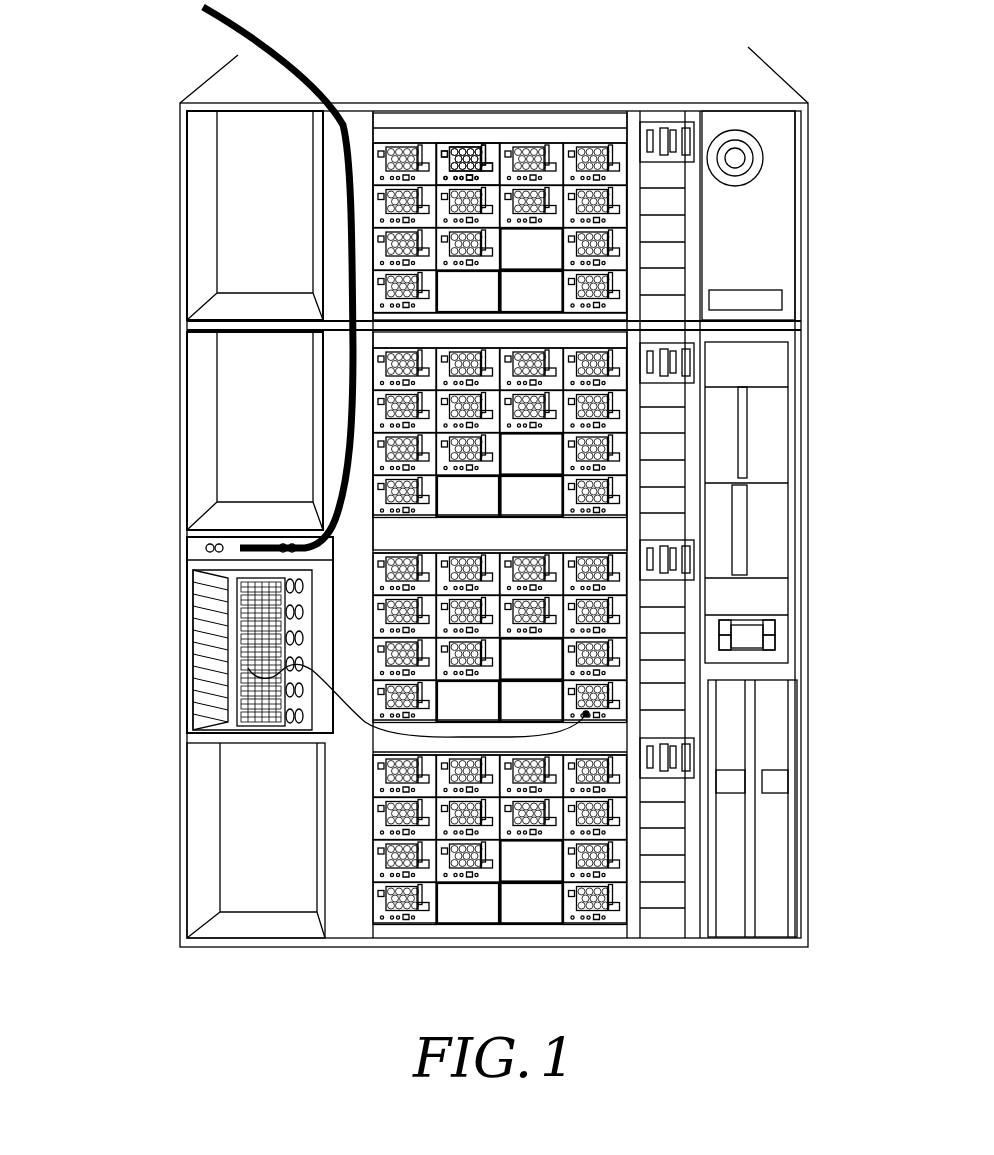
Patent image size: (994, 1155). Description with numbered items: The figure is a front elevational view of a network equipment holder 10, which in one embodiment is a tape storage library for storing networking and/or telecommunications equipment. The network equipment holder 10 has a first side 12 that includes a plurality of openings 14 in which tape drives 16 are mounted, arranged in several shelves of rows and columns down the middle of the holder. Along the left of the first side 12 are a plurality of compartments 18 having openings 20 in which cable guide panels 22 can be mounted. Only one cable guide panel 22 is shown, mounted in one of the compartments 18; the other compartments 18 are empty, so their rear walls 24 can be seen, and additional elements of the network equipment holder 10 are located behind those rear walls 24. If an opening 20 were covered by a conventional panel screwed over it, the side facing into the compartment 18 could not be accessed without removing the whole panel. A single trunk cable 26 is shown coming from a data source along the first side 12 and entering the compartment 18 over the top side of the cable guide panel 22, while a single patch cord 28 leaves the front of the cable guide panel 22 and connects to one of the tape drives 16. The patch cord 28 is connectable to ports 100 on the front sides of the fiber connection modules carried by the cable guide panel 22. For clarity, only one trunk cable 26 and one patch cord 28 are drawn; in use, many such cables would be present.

The network equipment holder 10 is at (752, 83).
The first side 12 is at (787, 325).
The openings 14 is at (546, 142).
The tape drives 16 is at (455, 142).
The compartments 18 is at (197, 192).
The openings 20 is at (187, 287).
The cable guide panel 22 is at (200, 565).
The rear walls 24 is at (229, 212).
The trunk cable 26 is at (313, 68).
The patch cord 28 is at (368, 733).
The ports 100 is at (248, 668).